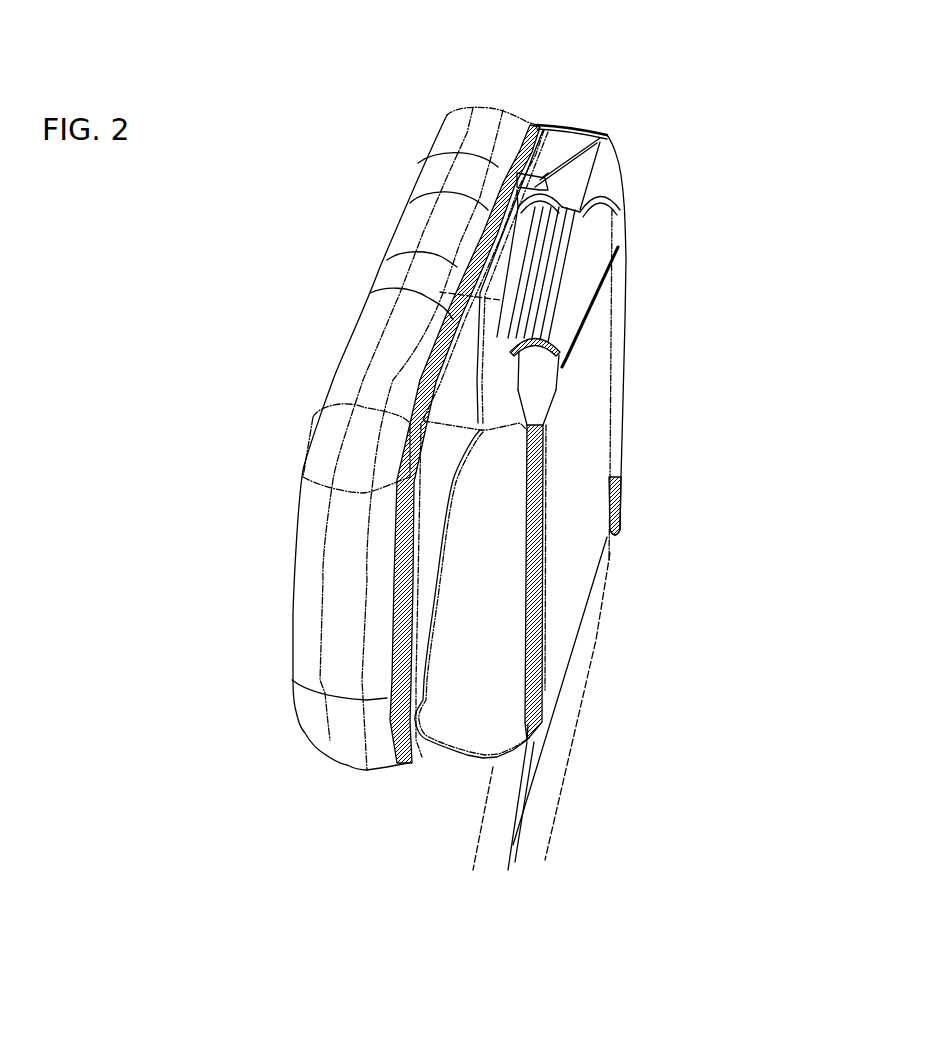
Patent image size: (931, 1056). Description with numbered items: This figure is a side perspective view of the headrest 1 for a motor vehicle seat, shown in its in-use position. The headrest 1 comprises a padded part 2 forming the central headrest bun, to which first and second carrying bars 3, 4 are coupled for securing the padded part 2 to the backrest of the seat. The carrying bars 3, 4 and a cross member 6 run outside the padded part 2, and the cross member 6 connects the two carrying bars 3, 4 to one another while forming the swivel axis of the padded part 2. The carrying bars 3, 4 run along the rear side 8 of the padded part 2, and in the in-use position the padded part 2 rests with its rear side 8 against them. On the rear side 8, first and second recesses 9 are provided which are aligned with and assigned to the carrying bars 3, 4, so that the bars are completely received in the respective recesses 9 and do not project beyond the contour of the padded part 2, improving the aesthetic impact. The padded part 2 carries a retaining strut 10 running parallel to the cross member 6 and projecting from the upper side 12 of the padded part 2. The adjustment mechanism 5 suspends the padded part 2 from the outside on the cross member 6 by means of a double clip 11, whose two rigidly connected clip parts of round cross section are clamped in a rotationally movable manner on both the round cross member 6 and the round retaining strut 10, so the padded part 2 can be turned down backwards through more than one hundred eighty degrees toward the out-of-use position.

The headrest 1 is at (262, 428).
The padded part 2 is at (410, 200).
The first carrying bar 3 is at (577, 725).
The second carrying bar 4 is at (497, 800).
The adjustment mechanism 5 is at (650, 190).
The cross member 6 is at (573, 297).
The rear side 8 is at (570, 550).
The recesses 9 is at (623, 513).
The retaining strut 10 is at (380, 237).
The double clip 11 is at (613, 250).
The upper side 12 is at (450, 117).